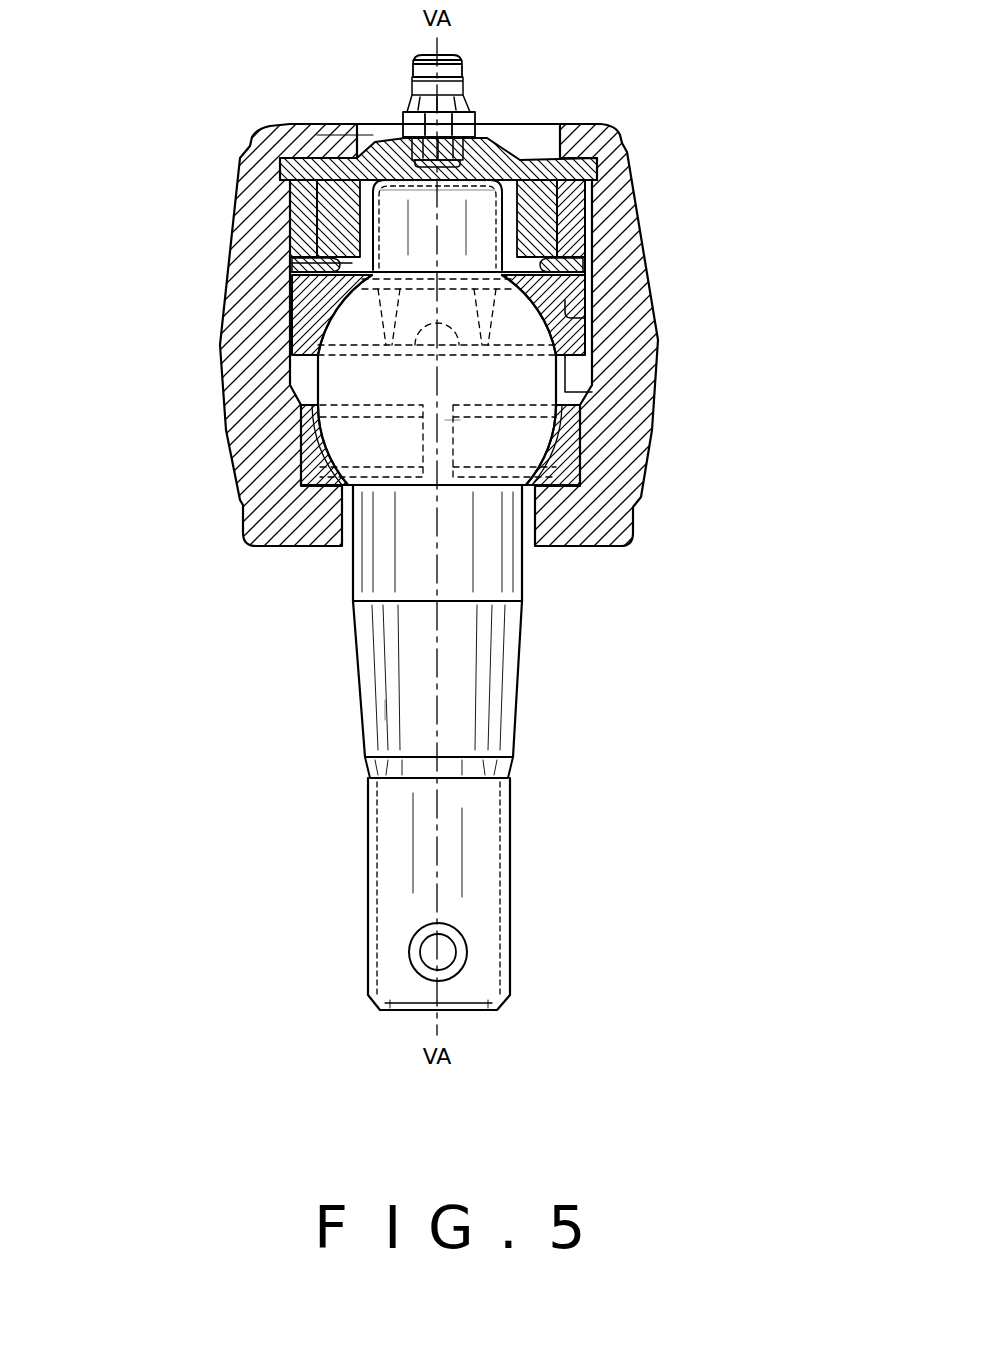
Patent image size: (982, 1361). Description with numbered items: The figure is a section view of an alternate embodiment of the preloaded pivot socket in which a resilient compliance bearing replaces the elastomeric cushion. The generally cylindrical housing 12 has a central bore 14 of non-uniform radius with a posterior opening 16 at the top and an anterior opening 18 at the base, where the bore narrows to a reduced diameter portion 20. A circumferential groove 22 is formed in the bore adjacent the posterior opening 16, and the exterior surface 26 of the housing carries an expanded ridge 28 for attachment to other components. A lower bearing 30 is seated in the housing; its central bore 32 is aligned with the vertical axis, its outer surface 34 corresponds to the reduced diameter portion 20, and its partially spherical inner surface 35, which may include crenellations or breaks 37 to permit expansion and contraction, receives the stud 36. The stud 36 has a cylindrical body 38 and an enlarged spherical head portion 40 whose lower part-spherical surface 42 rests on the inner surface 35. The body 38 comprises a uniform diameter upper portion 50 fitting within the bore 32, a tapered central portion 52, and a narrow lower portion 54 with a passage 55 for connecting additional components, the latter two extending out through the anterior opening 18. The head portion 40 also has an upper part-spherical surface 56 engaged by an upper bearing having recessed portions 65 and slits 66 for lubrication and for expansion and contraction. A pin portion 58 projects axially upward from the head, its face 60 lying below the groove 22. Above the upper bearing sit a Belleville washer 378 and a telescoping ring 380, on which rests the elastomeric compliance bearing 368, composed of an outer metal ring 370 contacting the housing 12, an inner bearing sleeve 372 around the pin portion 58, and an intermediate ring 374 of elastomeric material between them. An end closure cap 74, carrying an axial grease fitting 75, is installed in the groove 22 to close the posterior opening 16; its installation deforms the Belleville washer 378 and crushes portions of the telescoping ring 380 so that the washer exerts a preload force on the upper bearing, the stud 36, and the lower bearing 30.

The housing 12 is at (222, 400).
The central bore 14 is at (597, 331).
The posterior opening 16 is at (335, 147).
The anterior opening 18 is at (528, 523).
The reduced diameter portion 20 is at (585, 442).
The circumferential groove 22 is at (280, 165).
The exterior surface 26 is at (305, 302).
The expanded ridge 28 is at (220, 310).
The lower bearing 30 is at (562, 467).
The central bore 32 is at (320, 546).
The outer surface 34 is at (288, 427).
The inner surface 35 is at (292, 447).
The stud 36 is at (400, 747).
The crenellations or breaks 37 is at (455, 430).
The cylindrical body 38 is at (387, 713).
The head portion 40 is at (527, 383).
The lower part-spherical surface 42 is at (342, 495).
The upper portion 50 is at (352, 573).
The tapered central portion 52 is at (355, 677).
The lower portion 54 is at (365, 848).
The passage 55 is at (447, 943).
The upper part-spherical surface 56 is at (572, 278).
The pin portion 58 is at (400, 200).
The face 60 is at (480, 176).
The recessed portions 65 is at (524, 322).
The slits 66 is at (586, 247).
The end closure cap 74 is at (593, 133).
The grease fitting 75 is at (468, 58).
The elastomeric compliance bearing 368 is at (282, 197).
The outer metal ring 370 is at (535, 193).
The inner bearing sleeve 372 is at (566, 207).
The intermediate ring 374 is at (575, 165).
The Belleville washer 378 is at (292, 288).
The telescoping ring 380 is at (293, 263).